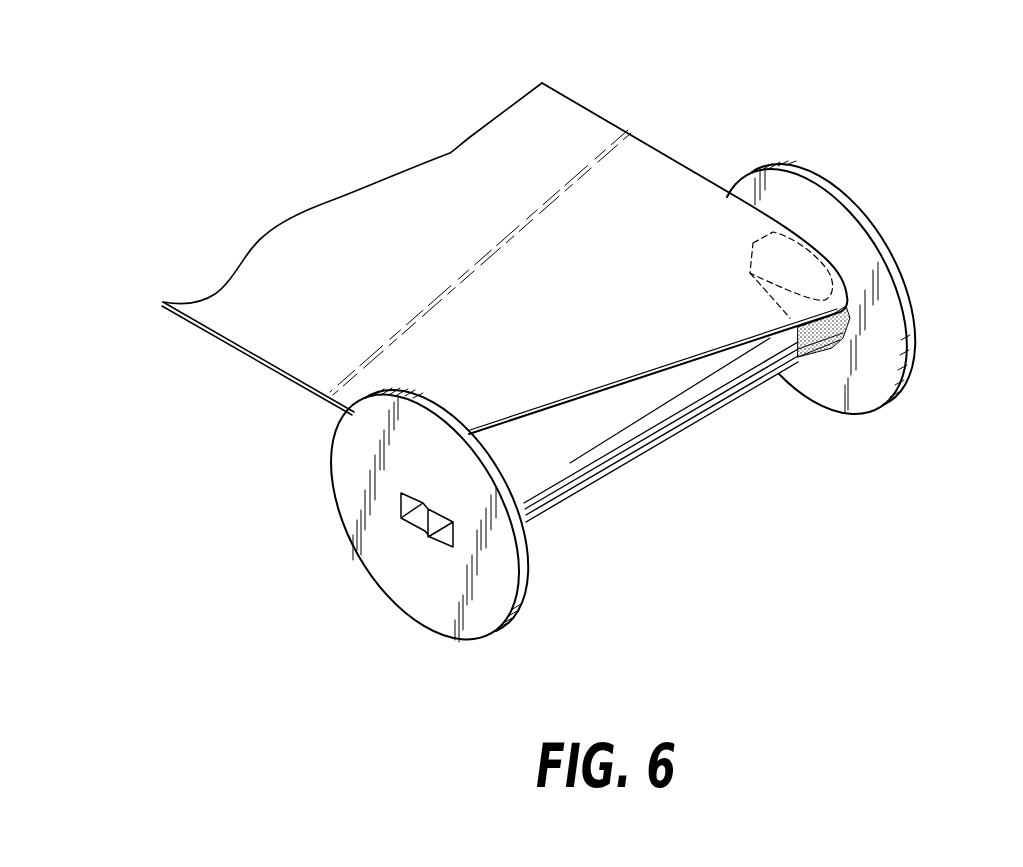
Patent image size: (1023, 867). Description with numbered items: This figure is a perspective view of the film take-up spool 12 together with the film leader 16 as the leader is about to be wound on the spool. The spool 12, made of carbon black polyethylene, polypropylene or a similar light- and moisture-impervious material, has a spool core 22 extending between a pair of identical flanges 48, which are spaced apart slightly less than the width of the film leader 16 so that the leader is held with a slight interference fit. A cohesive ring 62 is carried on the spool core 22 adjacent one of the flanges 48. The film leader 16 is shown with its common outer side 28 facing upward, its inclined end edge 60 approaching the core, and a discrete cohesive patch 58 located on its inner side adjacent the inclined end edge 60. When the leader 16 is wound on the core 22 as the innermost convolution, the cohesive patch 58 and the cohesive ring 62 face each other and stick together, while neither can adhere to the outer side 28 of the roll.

The film supply spool 12 is at (505, 630).
The film leader 16 is at (648, 144).
The spool core 22 is at (647, 455).
The common outer side of the roll 28 is at (589, 292).
The flanges 48 is at (465, 643).
The cohesive patch 58 is at (822, 262).
The inclined end edge 60 is at (700, 359).
The cohesive ring 62 is at (845, 332).